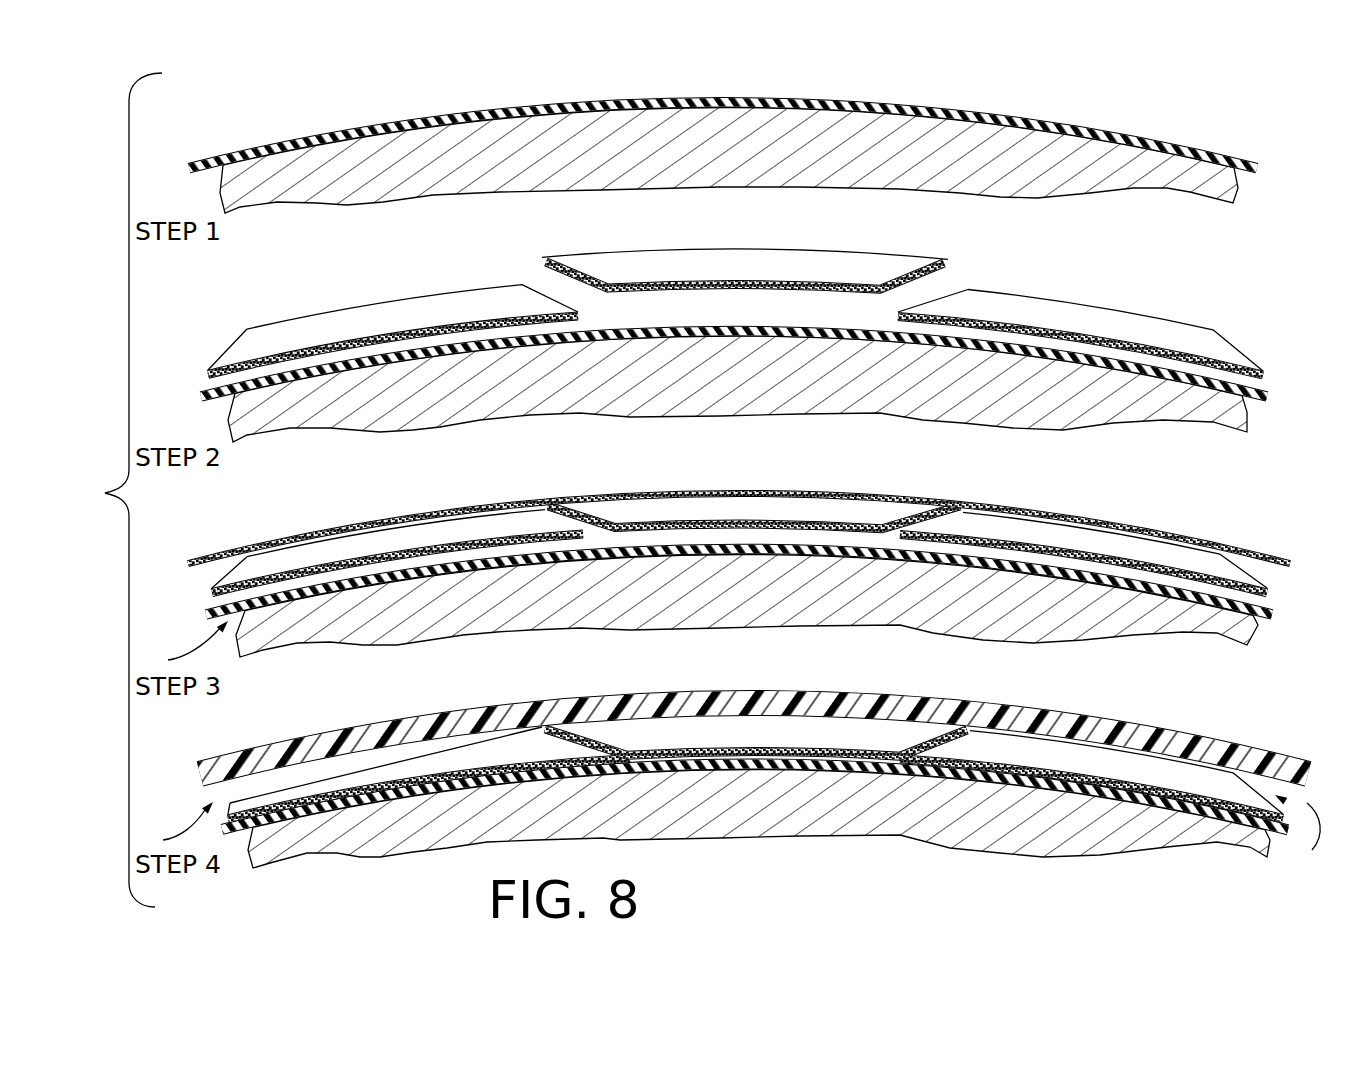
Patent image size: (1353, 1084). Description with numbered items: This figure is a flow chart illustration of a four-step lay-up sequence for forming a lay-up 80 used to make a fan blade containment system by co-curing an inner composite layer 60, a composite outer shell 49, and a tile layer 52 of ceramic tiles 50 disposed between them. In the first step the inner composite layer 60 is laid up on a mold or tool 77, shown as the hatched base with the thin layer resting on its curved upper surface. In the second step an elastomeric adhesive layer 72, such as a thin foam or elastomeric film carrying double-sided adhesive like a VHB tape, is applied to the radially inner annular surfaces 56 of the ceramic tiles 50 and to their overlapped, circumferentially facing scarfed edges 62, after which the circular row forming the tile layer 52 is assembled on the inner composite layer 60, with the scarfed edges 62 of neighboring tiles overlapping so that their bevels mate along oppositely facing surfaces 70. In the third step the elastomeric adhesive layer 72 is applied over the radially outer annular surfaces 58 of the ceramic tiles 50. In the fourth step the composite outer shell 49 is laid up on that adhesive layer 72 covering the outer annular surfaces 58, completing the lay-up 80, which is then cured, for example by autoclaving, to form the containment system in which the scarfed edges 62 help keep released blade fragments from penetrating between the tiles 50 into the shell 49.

The composite outer shell 49 is at (1108, 723).
The ceramic tiles 50 is at (760, 505).
The tile layer 52 is at (180, 738).
The radially inner annular surface 56 is at (683, 289).
The radially outer annular surface 58 is at (716, 252).
The inner composite layer 60 is at (917, 106).
The scarfed edges 62 is at (535, 292).
The oppositely facing surfaces 70 is at (779, 482).
The elastomeric adhesive layer 72 is at (781, 509).
The mold or tool 77 is at (1091, 198).
The lay-up 80 is at (1297, 832).